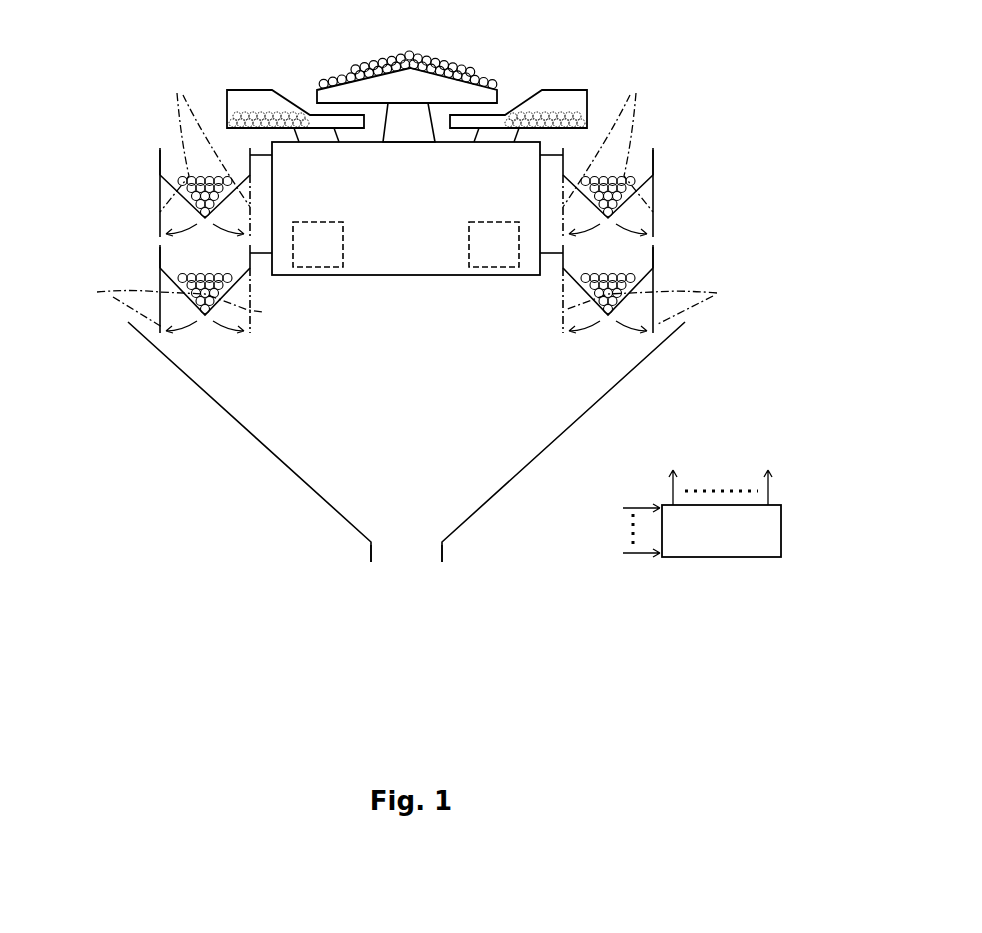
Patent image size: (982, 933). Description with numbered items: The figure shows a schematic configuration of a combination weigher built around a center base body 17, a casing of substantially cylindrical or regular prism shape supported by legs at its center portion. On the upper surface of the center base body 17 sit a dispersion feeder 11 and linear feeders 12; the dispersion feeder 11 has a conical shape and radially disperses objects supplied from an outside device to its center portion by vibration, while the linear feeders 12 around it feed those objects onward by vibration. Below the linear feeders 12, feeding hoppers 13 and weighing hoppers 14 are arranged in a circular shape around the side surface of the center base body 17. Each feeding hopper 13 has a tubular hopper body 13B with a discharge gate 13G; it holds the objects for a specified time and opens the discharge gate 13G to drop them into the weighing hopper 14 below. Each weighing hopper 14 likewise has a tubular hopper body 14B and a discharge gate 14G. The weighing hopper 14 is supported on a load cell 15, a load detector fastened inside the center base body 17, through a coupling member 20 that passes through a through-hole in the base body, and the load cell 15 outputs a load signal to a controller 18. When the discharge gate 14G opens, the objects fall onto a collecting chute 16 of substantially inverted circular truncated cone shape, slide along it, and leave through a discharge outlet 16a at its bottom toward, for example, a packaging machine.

The dispersion feeder 11 is at (453, 88).
The linear feeders 12 is at (243, 97).
The feeding hoppers 13 is at (150, 138).
The hopper body 13B is at (160, 157).
The discharge gate 13G is at (409, 140).
The weighing hoppers 14 is at (150, 238).
The hopper body 14B is at (160, 250).
The discharge gate 14G is at (406, 304).
The load cell 15 is at (343, 245).
The collecting chute 16 is at (607, 395).
The discharge outlet 16a is at (401, 570).
The center base body 17 is at (405, 275).
The controller 18 is at (781, 530).
The coupling member 20 is at (293, 252).